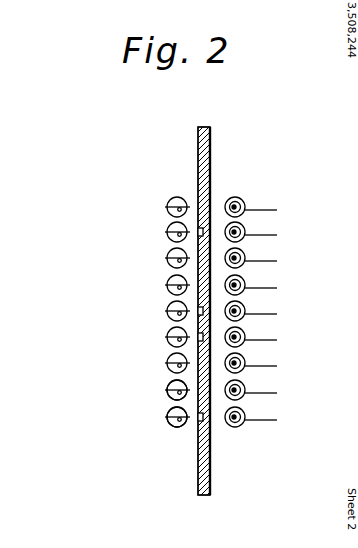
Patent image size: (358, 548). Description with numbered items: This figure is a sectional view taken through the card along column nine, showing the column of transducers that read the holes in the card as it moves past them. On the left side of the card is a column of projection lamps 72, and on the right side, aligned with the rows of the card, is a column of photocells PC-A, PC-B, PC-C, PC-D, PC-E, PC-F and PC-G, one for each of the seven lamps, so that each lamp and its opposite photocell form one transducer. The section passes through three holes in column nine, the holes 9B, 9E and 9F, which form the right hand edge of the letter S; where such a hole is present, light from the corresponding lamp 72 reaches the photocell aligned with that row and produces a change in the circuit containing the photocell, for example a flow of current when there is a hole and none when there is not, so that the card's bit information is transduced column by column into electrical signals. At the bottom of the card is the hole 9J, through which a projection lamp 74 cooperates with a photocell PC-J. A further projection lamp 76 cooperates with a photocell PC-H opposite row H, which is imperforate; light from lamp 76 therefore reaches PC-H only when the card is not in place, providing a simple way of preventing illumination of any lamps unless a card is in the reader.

The projection lamps 72 is at (168, 212).
The hole 9B is at (198, 234).
The hole 9E is at (198, 312).
The hole 9F is at (198, 340).
The hole 9J is at (198, 418).
The projection lamp 76 is at (169, 383).
The projection lamp 74 is at (167, 417).
The photocell PC-A is at (245, 204).
The photocell PC-B is at (245, 229).
The photocell PC-C is at (245, 255).
The photocell PC-D is at (245, 282).
The photocell PC-E is at (245, 308).
The photocell PC-F is at (245, 334).
The photocell PC-G is at (245, 360).
The photocell PC-H is at (245, 387).
The photocell PC-J is at (245, 414).